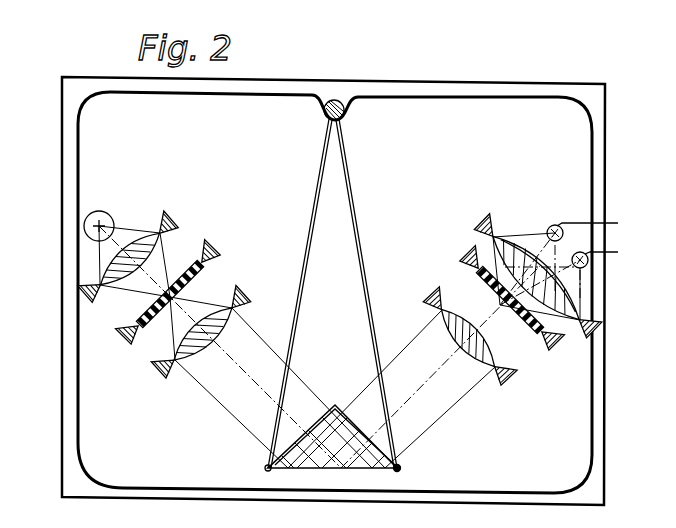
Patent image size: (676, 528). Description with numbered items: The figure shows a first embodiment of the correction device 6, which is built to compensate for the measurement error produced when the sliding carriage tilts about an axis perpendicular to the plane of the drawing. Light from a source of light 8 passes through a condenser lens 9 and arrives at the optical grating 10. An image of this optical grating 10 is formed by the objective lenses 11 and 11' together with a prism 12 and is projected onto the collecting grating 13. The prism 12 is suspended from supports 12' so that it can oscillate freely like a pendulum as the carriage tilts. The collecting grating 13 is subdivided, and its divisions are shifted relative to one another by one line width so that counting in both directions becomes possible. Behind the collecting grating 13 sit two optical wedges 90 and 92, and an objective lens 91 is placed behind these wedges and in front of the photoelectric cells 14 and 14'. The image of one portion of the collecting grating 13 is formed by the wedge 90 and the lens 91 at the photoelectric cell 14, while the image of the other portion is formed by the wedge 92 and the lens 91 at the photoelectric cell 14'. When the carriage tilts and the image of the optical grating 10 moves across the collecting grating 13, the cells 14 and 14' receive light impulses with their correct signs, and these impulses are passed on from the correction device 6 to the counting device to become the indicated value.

The correction device 6 is at (56, 392).
The source of light 8 is at (106, 213).
The condenser lens 9 is at (173, 238).
The optical grating 10 is at (131, 331).
The objective lens 11 is at (221, 333).
The objective lens 11' is at (447, 337).
The prism 12 is at (359, 438).
The supports 12' is at (340, 284).
The collecting grating 13 is at (480, 286).
The photoelectric cell 14 is at (590, 248).
The photoelectric cell 14' is at (582, 215).
The optical wedge 90 is at (546, 336).
The objective lens 91 is at (516, 252).
The optical wedge 92 is at (478, 254).